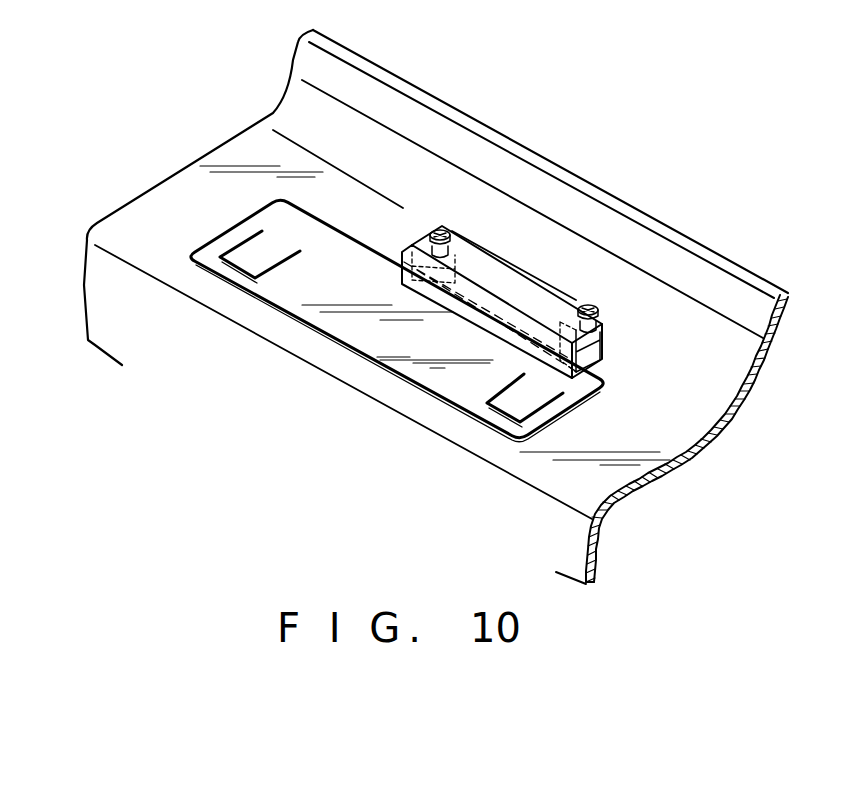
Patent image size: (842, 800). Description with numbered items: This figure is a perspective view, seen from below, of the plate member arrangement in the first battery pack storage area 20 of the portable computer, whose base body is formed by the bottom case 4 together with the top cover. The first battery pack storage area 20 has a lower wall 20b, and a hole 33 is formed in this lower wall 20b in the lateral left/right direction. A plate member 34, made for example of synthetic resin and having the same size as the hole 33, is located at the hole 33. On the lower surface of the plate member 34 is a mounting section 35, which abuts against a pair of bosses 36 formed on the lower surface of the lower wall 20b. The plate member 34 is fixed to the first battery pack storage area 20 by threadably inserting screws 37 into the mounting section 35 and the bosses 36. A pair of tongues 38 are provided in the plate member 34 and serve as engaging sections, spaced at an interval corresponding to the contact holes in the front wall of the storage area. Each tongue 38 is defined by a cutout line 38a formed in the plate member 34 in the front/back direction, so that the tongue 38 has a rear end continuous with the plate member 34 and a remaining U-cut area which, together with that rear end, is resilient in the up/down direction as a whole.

The bottom case 4 is at (110, 299).
The first battery pack storage area 20 is at (706, 468).
The lower wall 20b is at (190, 183).
The hole 33 is at (587, 396).
The plate member 34 is at (375, 347).
The mounting section 35 is at (524, 268).
The bosses 36 is at (416, 255).
The screws 37 is at (447, 228).
The tongues 38 is at (248, 260).
The cutout line 38a is at (280, 273).